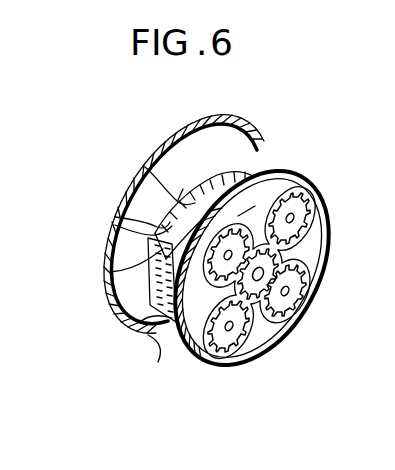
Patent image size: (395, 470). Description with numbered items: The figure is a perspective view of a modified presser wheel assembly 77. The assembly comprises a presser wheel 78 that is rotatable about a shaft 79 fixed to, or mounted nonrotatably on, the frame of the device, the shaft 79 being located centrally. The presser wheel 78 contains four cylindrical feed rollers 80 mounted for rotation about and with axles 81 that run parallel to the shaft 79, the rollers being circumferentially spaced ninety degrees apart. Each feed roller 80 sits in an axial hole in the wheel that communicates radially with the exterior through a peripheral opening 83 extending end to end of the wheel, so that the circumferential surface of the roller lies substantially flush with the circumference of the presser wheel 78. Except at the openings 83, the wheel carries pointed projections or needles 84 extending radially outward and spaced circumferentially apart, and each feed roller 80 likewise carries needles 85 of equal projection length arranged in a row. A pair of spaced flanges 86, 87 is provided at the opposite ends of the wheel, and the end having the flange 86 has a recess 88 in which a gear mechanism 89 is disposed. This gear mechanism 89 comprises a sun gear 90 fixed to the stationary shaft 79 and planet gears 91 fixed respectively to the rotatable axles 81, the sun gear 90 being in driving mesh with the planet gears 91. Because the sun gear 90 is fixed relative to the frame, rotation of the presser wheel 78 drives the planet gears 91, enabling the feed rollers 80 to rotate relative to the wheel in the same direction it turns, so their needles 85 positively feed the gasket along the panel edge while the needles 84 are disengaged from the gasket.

The modified presser wheel assembly 77 is at (117, 183).
The presser wheel 78 is at (222, 158).
The shaft 79 is at (277, 333).
The cylindrical feed rollers 80 is at (145, 167).
The axles 81 is at (312, 218).
The peripheral opening 83 is at (110, 272).
The needles 84 is at (181, 173).
The needles 85 is at (115, 217).
The flange 86 is at (283, 172).
The flange 87 is at (202, 122).
The recess 88 is at (187, 352).
The gear mechanism 89 is at (303, 278).
The sun gear 90 is at (285, 257).
The planet gears 91 is at (304, 200).